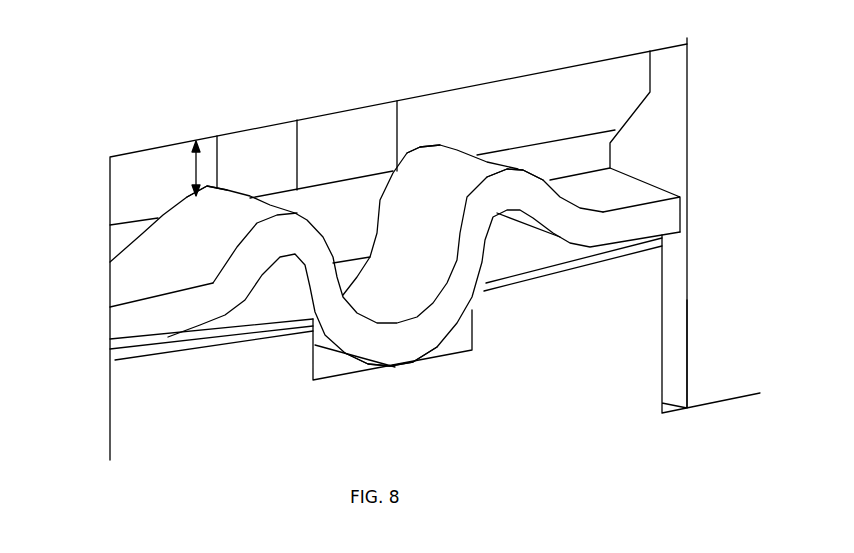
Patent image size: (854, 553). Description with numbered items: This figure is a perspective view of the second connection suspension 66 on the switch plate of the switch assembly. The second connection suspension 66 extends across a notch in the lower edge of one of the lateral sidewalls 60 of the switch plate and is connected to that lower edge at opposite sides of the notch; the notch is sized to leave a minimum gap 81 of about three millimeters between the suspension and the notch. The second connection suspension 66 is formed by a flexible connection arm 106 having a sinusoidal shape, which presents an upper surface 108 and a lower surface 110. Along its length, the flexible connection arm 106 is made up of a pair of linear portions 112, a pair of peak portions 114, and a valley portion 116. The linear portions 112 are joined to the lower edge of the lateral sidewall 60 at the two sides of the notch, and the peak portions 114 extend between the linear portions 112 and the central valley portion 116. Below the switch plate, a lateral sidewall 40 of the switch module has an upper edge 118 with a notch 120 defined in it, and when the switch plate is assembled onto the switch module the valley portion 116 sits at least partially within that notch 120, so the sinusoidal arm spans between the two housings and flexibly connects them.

The lateral sidewall 40 is at (593, 307).
The lateral sidewall 60 is at (713, 355).
The second connection suspension 66 is at (472, 112).
The minimum gap 81 is at (197, 167).
The flexible connection arm 106 is at (520, 168).
The upper surface 108 is at (425, 218).
The lower surface 110 is at (226, 311).
The linear portion 112 is at (635, 198).
The peak portion 114 is at (228, 207).
The valley portion 116 is at (410, 350).
The upper edge 118 is at (500, 263).
The notch 120 is at (325, 378).